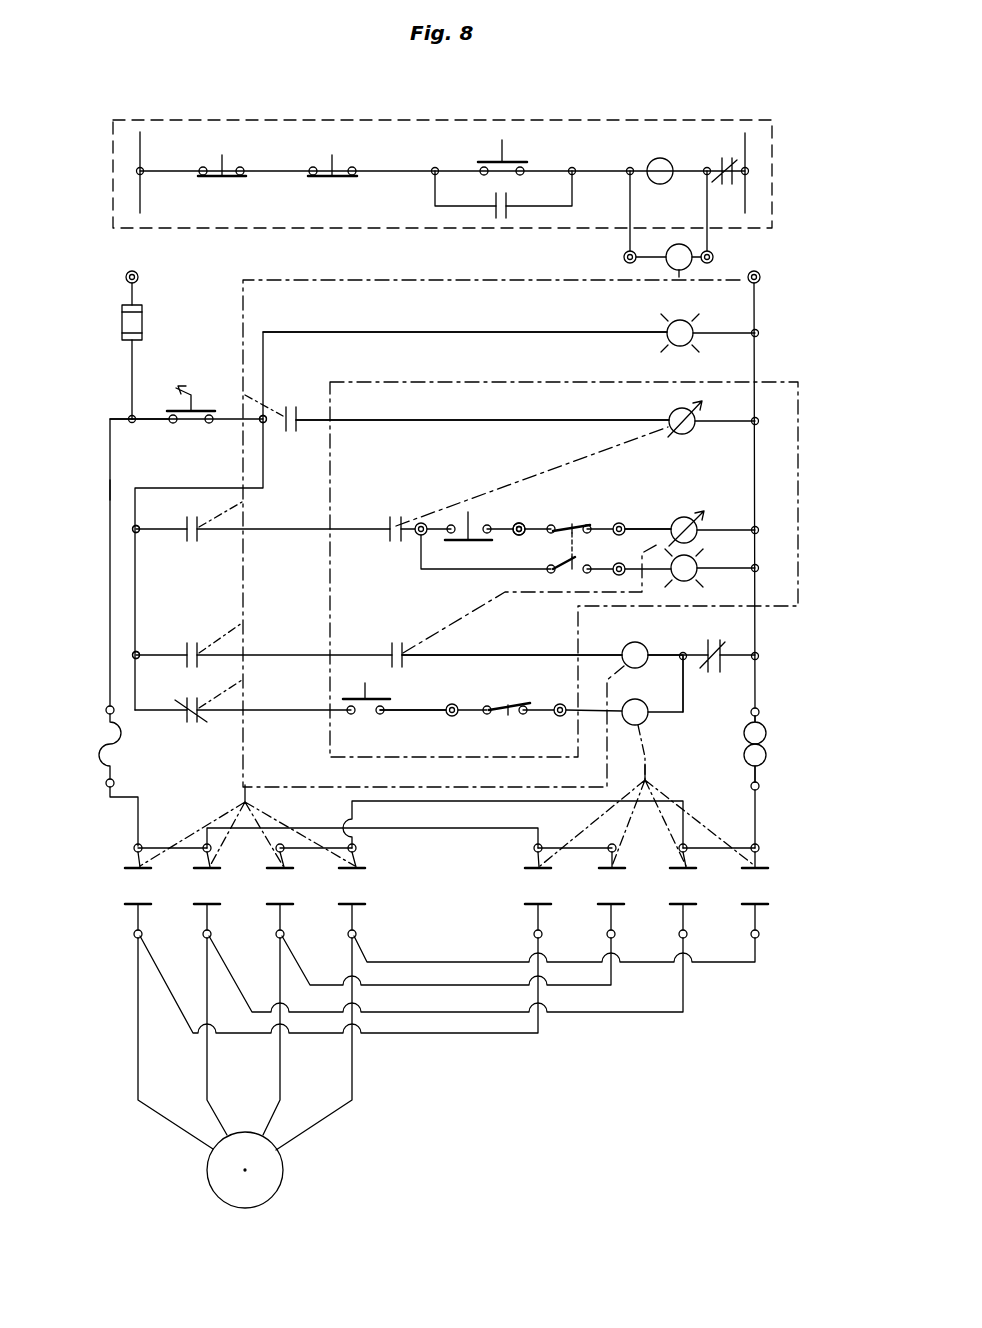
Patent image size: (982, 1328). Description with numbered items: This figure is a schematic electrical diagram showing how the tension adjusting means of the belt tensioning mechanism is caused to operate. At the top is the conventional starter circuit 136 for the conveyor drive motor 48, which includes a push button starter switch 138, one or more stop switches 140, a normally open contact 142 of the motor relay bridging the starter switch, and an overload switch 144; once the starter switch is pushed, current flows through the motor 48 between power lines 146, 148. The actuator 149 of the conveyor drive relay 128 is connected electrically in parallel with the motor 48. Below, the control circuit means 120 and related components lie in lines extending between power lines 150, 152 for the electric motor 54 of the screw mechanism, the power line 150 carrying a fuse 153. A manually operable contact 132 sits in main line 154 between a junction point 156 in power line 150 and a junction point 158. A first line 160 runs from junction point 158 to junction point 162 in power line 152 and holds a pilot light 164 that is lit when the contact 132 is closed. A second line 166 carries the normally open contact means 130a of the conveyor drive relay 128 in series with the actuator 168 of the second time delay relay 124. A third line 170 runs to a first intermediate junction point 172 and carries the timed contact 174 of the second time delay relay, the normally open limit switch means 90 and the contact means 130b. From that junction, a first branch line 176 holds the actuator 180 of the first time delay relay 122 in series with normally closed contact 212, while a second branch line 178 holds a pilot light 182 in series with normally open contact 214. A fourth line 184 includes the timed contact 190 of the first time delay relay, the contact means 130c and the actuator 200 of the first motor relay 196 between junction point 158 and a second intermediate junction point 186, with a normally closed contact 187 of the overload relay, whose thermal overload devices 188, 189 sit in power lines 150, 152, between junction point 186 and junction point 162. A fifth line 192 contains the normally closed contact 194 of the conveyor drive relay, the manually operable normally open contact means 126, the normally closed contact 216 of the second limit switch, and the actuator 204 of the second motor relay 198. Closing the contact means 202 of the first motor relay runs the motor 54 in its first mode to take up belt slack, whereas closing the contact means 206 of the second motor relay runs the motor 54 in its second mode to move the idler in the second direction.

The starter circuit 136 is at (655, 119).
The power line 146 is at (143, 148).
The stop switch 140 is at (227, 166).
The push button starter switch 138 is at (504, 158).
The normally open contact 142 is at (508, 206).
The electric drive motor 48 is at (651, 162).
The overload switch 144 is at (718, 175).
The power line 148 is at (748, 146).
The actuator 149 is at (680, 246).
The conveyor drive relay 128 is at (337, 279).
The fuse 153 is at (142, 325).
The junction point 156 is at (130, 418).
The main line 154 is at (148, 421).
The manually operable contact 132 is at (185, 422).
The power line 150 is at (110, 492).
The normally open contact means 130a is at (313, 386).
The junction point 158 is at (266, 422).
The first line 160 is at (490, 332).
The pilot light 164 is at (668, 326).
The junction point 162 is at (758, 333).
The power line 152 is at (757, 360).
The control circuit means 120 is at (800, 470).
The actuator 168 is at (695, 431).
The second line 166 is at (470, 424).
The second time delay relay 124 is at (545, 478).
The normally open timed delayed contact for closing 174 is at (391, 517).
The third line 170 is at (423, 537).
The normally open limit switch means 90 is at (471, 518).
The first intermediate junction point 172 is at (522, 522).
The normally closed contact 212 is at (574, 524).
The normally open contact 214 is at (578, 560).
The first branch line 176 is at (645, 529).
The actuator 180 is at (702, 517).
The pilot light 182 is at (698, 566).
The second branch line 178 is at (700, 575).
The normally open contact means 130b is at (198, 540).
The normally open contact means 130c is at (193, 643).
The normally closed contact 194 is at (200, 722).
The normally open timed delayed contact for closing 190 is at (392, 645).
The first time delay relay 122 is at (458, 622).
The fourth line 184 is at (538, 654).
The actuator 200 is at (628, 645).
The second intermediate junction point 186 is at (683, 654).
The normally closed contact 187 is at (708, 640).
The manually operable normally open contact means 126 is at (368, 697).
The fifth line 192 is at (428, 712).
The normally closed contact 216 is at (512, 706).
The actuator 204 is at (648, 720).
The thermal overload device 188 is at (104, 746).
The thermal overload device 189 is at (765, 745).
The first motor relay 196 is at (296, 787).
The second motor relay 198 is at (650, 769).
The normally open contact means 202 is at (363, 917).
The normally open contact means 206 is at (768, 917).
The electric motor 54 is at (207, 1170).